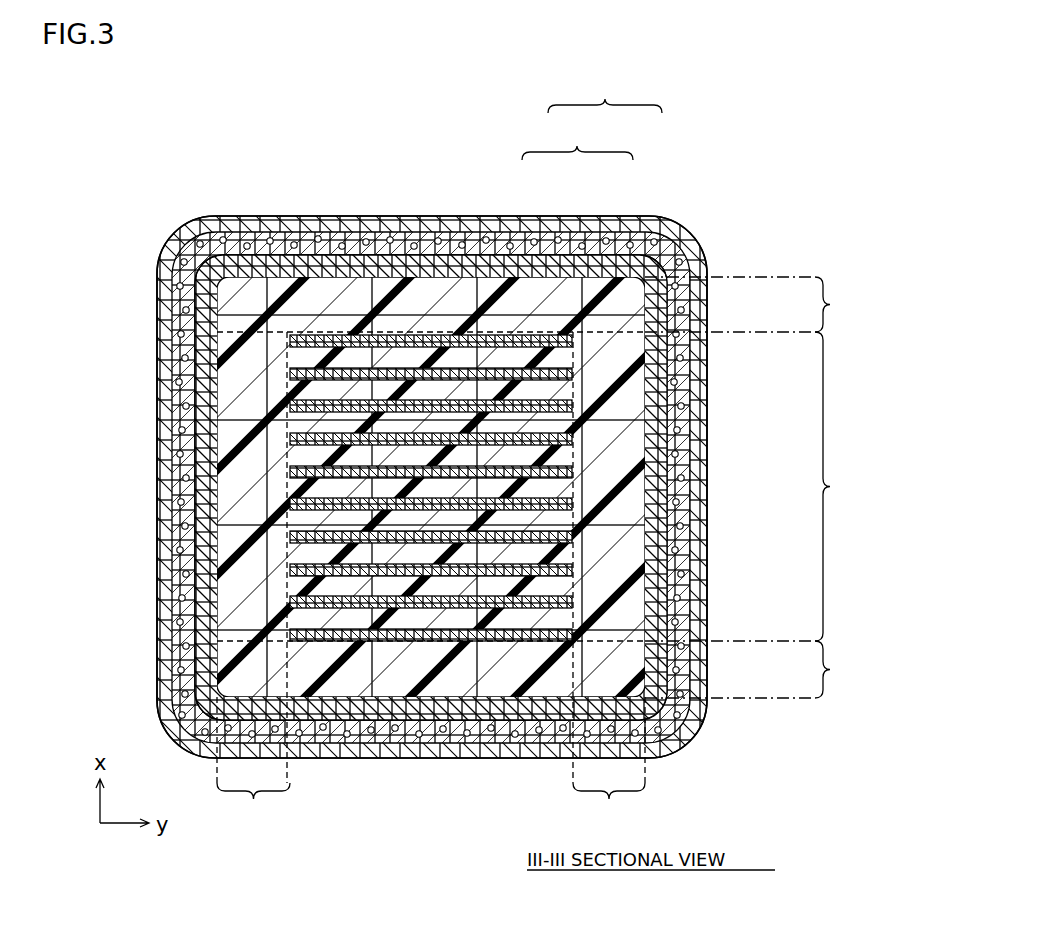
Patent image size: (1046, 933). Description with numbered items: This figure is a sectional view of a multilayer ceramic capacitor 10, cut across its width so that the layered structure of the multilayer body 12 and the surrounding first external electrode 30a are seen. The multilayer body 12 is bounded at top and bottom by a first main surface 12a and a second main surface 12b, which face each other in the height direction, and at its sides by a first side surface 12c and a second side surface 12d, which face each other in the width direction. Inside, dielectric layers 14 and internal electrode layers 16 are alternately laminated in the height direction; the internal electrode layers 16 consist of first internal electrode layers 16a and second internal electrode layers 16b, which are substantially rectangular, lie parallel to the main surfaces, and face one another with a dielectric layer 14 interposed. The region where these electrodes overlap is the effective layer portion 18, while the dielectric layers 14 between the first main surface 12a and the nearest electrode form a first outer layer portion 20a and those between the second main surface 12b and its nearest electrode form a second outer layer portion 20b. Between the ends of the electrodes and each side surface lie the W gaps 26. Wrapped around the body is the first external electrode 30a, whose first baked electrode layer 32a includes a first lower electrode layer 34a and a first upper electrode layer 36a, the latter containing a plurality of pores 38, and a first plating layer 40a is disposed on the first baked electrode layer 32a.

The multilayer ceramic capacitor 10 is at (206, 162).
The multilayer body 12 is at (478, 266).
The first main surface 12a is at (304, 266).
The second main surface 12b is at (377, 708).
The first side surface 12c is at (206, 515).
The second side surface 12d is at (656, 522).
The dielectric layers 14 is at (438, 420).
The internal electrode layers 16 is at (432, 557).
The first internal electrode layers 16a is at (289, 408).
The second internal electrode layers 16b is at (574, 408).
The effective layer portion 18 is at (542, 486).
The first outer layer portion 20a is at (761, 304).
The second outer layer portion 20b is at (761, 669).
The W gaps 26 is at (431, 762).
The first external electrode 30a is at (605, 91).
The first baked electrode layer 32a is at (577, 138).
The first lower electrode layer 34a is at (543, 215).
The first upper electrode layer 36a is at (596, 215).
The pores 38 is at (357, 240).
The first plating layer 40a is at (633, 215).